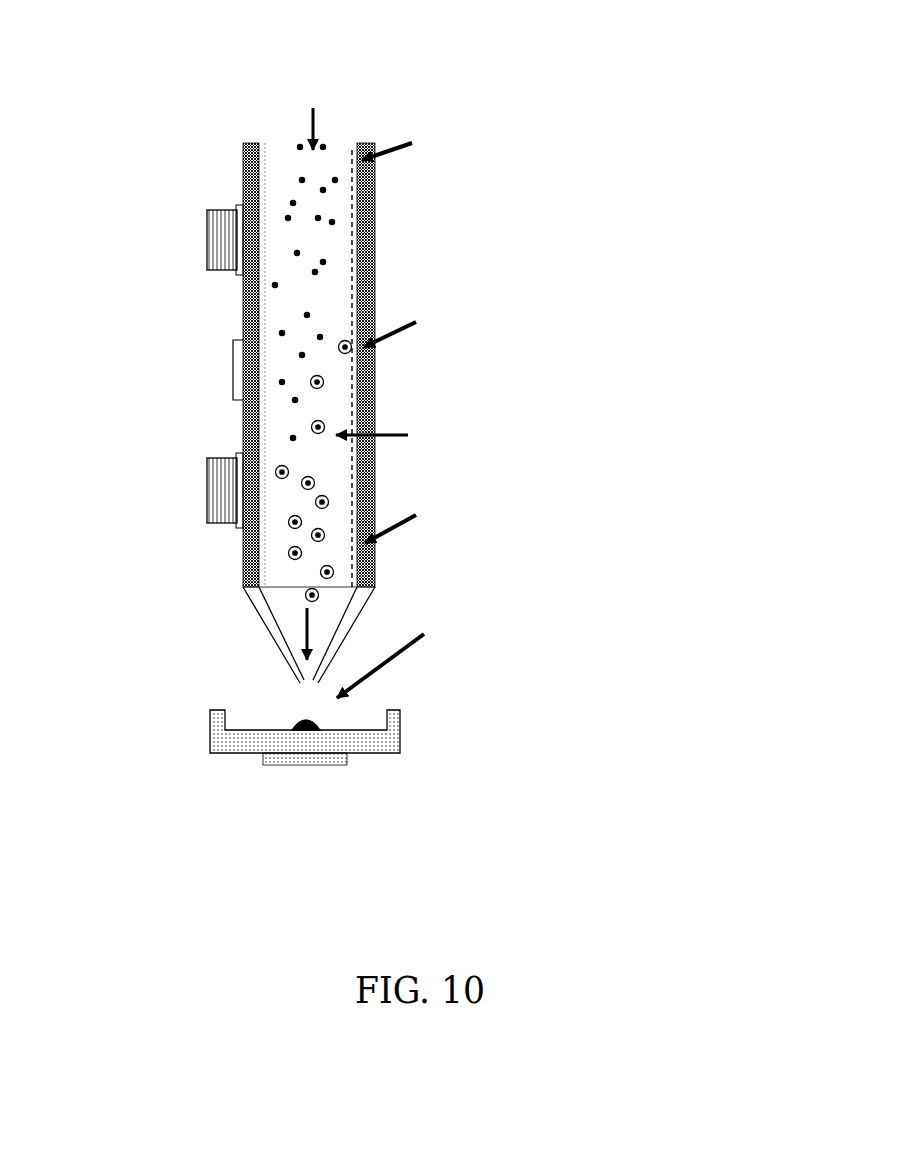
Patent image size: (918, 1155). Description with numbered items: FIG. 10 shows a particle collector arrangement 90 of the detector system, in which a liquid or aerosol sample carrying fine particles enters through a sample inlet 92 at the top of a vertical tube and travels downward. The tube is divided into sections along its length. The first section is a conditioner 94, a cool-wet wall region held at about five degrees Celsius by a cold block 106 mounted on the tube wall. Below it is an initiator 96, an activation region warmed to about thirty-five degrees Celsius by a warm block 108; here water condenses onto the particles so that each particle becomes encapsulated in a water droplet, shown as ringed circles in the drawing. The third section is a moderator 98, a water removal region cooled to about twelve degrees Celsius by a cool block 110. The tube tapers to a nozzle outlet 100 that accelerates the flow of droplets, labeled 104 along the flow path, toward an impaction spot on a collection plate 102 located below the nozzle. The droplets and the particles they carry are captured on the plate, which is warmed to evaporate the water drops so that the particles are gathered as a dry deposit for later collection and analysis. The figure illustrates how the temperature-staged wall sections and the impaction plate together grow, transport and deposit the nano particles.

The particle collection system 90 is at (140, 125).
The sample inlet 92 is at (385, 50).
The conditioner (cool-wet wall) section 94 is at (600, 190).
The initiator (activation region) section 96 is at (640, 348).
The moderator (water removal region) section 98 is at (699, 556).
The nozzle outlet 100 is at (228, 672).
The collection plate 102 is at (213, 753).
The sample flow / wetted wall surface 104 is at (351, 264).
The cold section (5°C) 106 is at (205, 265).
The warm section (35°C) 108 is at (243, 400).
The cool section (12°C) 110 is at (205, 523).